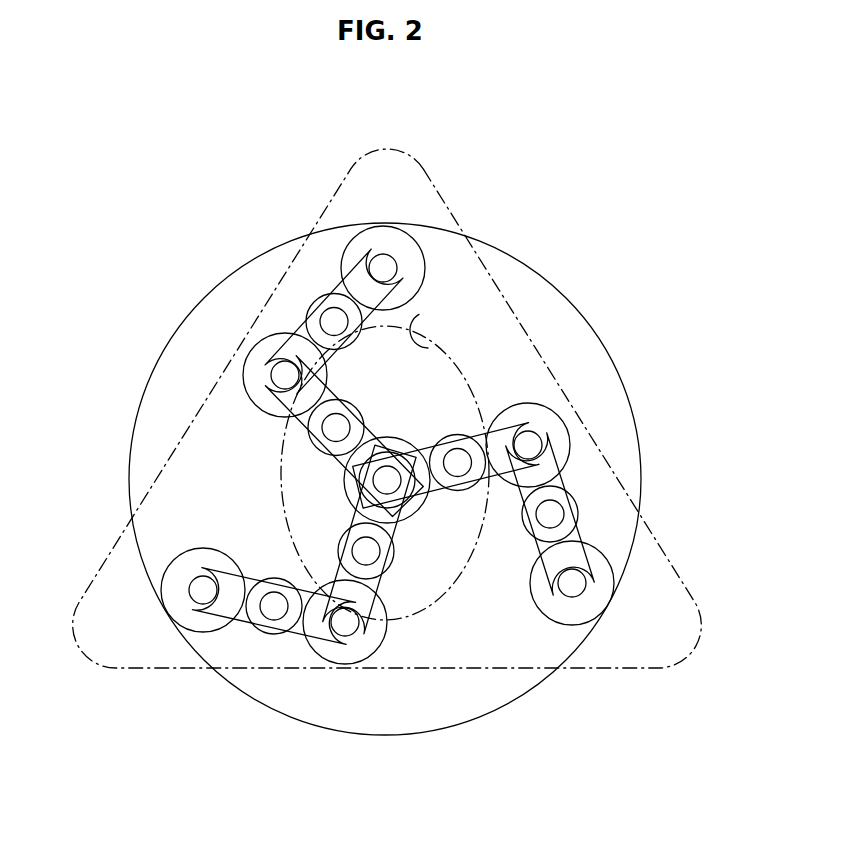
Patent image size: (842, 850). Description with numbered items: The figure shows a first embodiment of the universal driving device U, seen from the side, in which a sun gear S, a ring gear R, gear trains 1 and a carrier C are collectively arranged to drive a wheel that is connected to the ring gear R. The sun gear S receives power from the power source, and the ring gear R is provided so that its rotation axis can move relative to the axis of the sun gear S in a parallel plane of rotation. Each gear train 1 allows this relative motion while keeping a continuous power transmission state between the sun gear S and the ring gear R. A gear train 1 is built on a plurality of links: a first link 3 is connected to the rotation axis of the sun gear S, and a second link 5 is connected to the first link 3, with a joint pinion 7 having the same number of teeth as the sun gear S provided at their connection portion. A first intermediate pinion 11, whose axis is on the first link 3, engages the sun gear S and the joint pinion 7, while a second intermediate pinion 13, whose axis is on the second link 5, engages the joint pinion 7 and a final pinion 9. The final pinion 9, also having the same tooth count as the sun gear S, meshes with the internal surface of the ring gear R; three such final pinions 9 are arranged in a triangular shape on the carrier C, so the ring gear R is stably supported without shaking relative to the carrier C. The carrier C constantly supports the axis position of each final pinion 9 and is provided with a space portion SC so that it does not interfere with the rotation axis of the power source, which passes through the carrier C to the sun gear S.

The gear train 1 is at (597, 517).
The first link 3 is at (288, 406).
The second link 5 is at (343, 238).
The joint pinion 7 is at (247, 367).
The final pinion 9 is at (375, 243).
The first intermediate pinion 11 is at (380, 397).
The second intermediate pinion 13 is at (313, 307).
The universal driving device U is at (460, 191).
The ring gear R is at (540, 276).
The carrier C is at (590, 437).
The space portion SC is at (443, 332).
The sun gear S is at (405, 500).